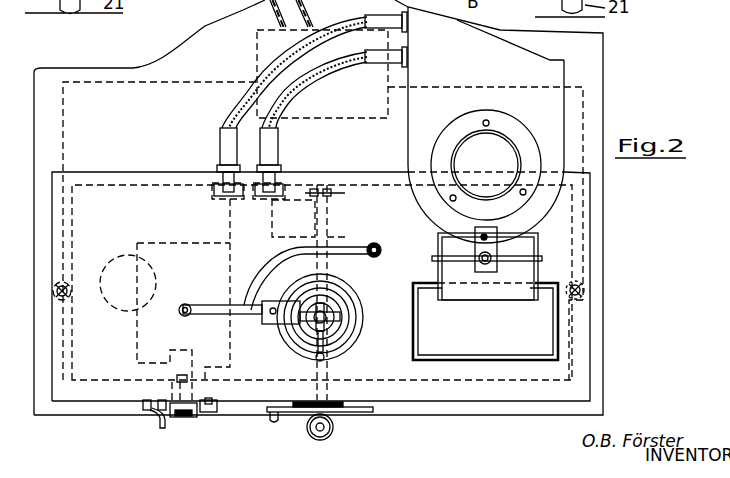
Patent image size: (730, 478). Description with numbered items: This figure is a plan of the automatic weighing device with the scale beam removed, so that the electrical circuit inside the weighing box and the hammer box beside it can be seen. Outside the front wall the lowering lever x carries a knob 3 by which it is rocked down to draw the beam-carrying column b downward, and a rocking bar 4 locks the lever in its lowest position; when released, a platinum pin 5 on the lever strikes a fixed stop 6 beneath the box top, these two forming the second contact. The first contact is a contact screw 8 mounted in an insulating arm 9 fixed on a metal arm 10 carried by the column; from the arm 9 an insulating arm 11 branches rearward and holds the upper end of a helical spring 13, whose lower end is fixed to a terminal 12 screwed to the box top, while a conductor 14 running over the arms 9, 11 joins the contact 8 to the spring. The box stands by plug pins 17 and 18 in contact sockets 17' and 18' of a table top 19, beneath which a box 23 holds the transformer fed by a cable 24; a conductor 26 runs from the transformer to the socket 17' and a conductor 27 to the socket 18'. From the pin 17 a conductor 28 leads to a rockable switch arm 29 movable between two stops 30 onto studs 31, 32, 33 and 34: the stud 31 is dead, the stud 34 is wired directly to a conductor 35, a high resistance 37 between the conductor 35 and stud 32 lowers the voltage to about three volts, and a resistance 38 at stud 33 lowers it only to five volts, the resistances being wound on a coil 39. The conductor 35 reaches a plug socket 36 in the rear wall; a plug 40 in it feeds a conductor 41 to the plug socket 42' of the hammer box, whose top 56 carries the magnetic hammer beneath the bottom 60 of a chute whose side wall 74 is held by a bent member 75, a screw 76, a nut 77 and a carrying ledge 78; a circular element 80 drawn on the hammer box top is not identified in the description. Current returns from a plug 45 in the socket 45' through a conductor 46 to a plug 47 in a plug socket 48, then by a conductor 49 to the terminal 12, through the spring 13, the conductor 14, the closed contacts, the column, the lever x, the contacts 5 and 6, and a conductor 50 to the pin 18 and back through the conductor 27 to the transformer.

The knob 3 is at (317, 440).
The rocking bar 4 is at (290, 413).
The platinum pin 5 is at (315, 360).
The fixed stop 6 is at (326, 356).
The contact screw 8 is at (185, 304).
The insulating arm 9 is at (212, 305).
The metal arm 10 is at (268, 324).
The insulating arm 11 is at (332, 262).
The terminal 12 is at (376, 244).
The helical spring 13 is at (381, 250).
The conductor 14 is at (266, 274).
The plug pin 17 is at (77, 275).
The contact socket 17' is at (29, 290).
The plug pin 18 is at (601, 280).
The contact socket 18' is at (613, 293).
The table top 19 is at (395, 408).
The box 23 is at (257, 48).
The cable 24 is at (277, 2).
The conductor 26 is at (65, 116).
The conductor 27 is at (585, 129).
The conductor 28 is at (72, 378).
The rockable switch arm 29 is at (197, 414).
The stops 30 is at (215, 408).
The stud 31 is at (152, 412).
The stud 32 is at (180, 417).
The stud 33 is at (190, 417).
The stud 34 is at (209, 402).
The conductor 35 is at (230, 222).
The plug socket 36 is at (220, 184).
The high resistance 37 is at (128, 322).
The resistance 38 is at (158, 341).
The coil 39 is at (128, 283).
The plug 40 is at (225, 133).
The conductor 41 is at (294, 72).
The plug socket 42' is at (405, 26).
The plug 45 is at (373, 78).
The plug socket 45' is at (405, 61).
The conductor 46 is at (314, 90).
The plug 47 is at (273, 152).
The plug socket 48 is at (270, 180).
The conductor 49 is at (343, 234).
The conductor 50 is at (383, 378).
The top of the hammer box 56 is at (486, 125).
The chute bottom 60 is at (488, 271).
The chute side wall 74 is at (538, 250).
The bent member 75 is at (518, 262).
The screw 76 is at (487, 265).
The nut 77 is at (492, 258).
The carrying ledge 78 is at (497, 232).
The blower opening 80 is at (513, 134).